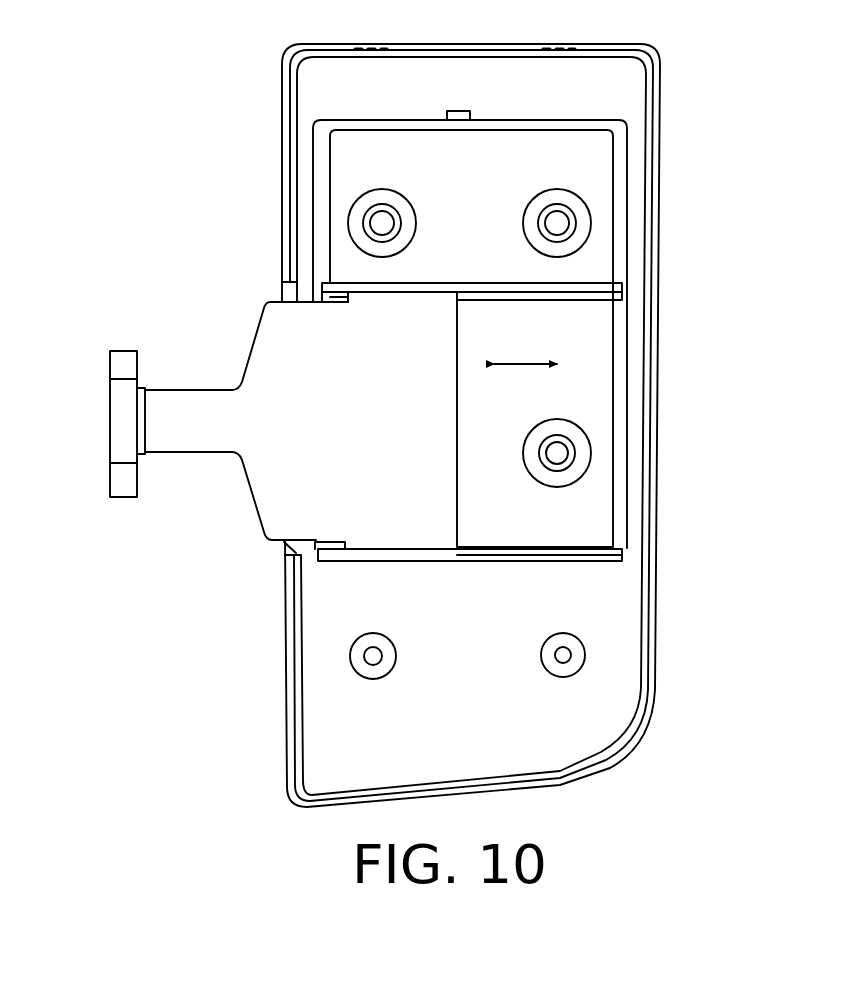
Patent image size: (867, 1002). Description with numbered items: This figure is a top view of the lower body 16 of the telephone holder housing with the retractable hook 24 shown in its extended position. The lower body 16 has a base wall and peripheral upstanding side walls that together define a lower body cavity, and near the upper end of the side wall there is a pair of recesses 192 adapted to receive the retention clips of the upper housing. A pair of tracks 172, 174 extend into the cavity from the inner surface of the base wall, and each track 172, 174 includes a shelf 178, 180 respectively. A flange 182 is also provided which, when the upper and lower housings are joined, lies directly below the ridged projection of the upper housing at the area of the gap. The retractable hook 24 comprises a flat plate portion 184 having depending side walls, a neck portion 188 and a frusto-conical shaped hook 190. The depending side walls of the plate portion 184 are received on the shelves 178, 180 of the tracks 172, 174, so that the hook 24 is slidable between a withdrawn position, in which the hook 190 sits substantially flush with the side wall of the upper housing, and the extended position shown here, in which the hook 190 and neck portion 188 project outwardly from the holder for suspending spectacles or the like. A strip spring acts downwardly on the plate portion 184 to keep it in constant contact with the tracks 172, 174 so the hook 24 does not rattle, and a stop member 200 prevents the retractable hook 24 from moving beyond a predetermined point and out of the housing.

The lower body 16 is at (271, 53).
The retractable hook 24 is at (193, 429).
The track 172 is at (588, 289).
The track 174 is at (570, 560).
The shelf 178 is at (598, 296).
The shelf 180 is at (595, 548).
The flange 182 is at (464, 110).
The flat plate portion 184 is at (275, 518).
The neck portion 188 is at (178, 446).
The frusto-conical shaped hook 190 is at (112, 485).
The recesses 192 is at (551, 45).
The stop member 200 is at (320, 551).